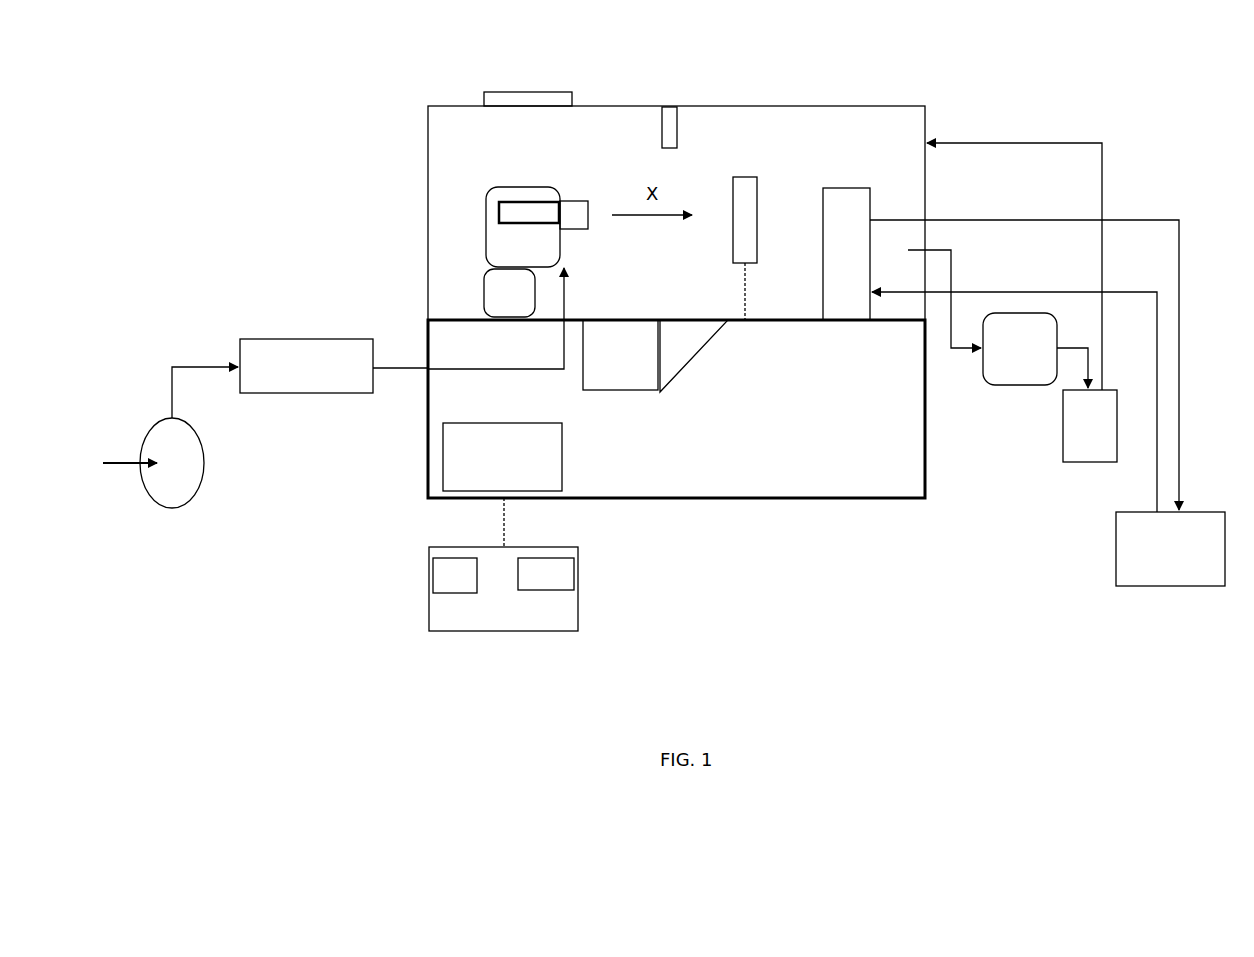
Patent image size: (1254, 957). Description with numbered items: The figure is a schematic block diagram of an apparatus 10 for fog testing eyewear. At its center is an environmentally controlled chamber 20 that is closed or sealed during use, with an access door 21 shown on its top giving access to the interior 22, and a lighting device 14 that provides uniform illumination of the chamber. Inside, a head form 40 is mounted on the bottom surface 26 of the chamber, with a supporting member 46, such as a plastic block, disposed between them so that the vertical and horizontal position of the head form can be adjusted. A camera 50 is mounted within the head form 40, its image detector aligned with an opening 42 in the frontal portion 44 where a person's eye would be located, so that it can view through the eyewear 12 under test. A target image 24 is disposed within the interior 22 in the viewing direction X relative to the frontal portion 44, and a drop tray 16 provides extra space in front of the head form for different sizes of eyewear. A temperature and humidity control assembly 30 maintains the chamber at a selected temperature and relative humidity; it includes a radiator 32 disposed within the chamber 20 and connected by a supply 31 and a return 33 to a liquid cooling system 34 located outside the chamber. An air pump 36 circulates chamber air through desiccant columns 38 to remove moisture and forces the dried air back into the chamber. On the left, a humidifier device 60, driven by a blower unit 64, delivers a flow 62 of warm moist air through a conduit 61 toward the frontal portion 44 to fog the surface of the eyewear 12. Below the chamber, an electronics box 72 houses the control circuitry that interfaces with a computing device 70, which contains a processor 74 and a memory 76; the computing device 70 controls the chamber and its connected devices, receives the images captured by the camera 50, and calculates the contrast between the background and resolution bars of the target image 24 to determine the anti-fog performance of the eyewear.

The apparatus 10 is at (212, 85).
The chamber 20 is at (805, 104).
The access door 21 is at (497, 92).
The lighting device 14 is at (686, 127).
The interior 22 is at (865, 135).
The head form 40 is at (486, 207).
The camera 50 is at (518, 202).
The opening 42 is at (561, 200).
The eyewear 12 is at (589, 203).
The frontal portion 44 is at (564, 250).
The supporting member 46 is at (509, 293).
The flow of warm moist air 62 is at (579, 294).
The target image 24 is at (745, 231).
The radiator 32 is at (846, 254).
The return 33 is at (1024, 350).
The supply 31 is at (1014, 386).
The air pump 36 is at (998, 319).
The desiccant columns 38 is at (1090, 426).
The liquid cooling system 34 is at (1170, 549).
The temperature and humidity control assembly 30 is at (1212, 210).
The bottom surface 26 is at (428, 316).
The conduit 61 is at (515, 370).
The drop tray 16 is at (690, 366).
The electronics box 72 is at (502, 457).
The computing device 70 is at (503, 564).
The memory 76 is at (455, 575).
The processor 74 is at (546, 574).
The humidifier device 60 is at (334, 366).
The blower unit 64 is at (170, 437).